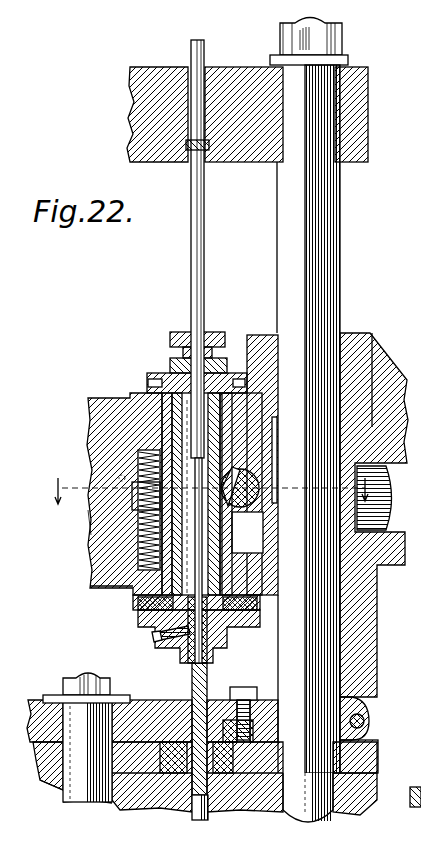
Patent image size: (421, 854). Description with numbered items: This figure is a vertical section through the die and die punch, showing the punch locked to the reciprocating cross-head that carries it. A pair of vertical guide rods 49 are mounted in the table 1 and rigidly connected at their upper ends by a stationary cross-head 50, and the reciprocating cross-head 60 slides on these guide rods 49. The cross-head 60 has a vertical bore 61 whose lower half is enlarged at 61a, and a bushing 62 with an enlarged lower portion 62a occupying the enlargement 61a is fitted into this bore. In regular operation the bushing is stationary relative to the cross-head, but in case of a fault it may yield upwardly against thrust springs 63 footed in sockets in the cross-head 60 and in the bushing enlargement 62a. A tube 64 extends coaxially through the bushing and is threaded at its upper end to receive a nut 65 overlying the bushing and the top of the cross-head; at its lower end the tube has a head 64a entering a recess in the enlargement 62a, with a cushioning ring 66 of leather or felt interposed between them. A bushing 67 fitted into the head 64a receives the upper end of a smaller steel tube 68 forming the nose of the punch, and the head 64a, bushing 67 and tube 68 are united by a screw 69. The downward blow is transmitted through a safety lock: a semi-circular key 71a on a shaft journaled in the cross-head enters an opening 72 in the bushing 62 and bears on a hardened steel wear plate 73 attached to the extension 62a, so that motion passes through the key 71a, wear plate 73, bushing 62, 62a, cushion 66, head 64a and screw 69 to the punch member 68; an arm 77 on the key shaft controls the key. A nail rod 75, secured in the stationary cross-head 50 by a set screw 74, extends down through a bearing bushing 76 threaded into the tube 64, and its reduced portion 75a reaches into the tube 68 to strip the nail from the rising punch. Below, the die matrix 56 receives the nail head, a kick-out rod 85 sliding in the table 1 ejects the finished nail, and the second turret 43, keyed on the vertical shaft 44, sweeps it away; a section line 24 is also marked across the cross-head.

The table 1 is at (358, 795).
The section line 24 is at (212, 491).
The second turret 43 is at (38, 700).
The vertical shaft 44 is at (73, 793).
The vertical guide rods 49 is at (323, 250).
The stationary cross-head 50 is at (149, 67).
The die matrix 56 is at (148, 805).
The reciprocating cross-head 60 is at (95, 424).
The vertical bore 61 is at (128, 399).
The bore enlargement 61a is at (96, 523).
The bushing 62 is at (148, 390).
The bushing enlargement 62a is at (96, 588).
The thrust springs 63 is at (95, 550).
The tube 64 is at (138, 477).
The head 64a is at (152, 637).
The nut 65 is at (158, 372).
The cushioning ring 66 is at (240, 586).
The bushing 67 is at (220, 633).
The steel tube 68 is at (194, 690).
The screw 69 is at (160, 642).
The key 71a is at (246, 480).
The recess or opening 72 is at (271, 441).
The wear plate 73 is at (247, 532).
The set screw 74 is at (206, 152).
The nail rod 75 is at (199, 254).
The reduced portion 75a is at (201, 573).
The bearing bushing 76 is at (217, 331).
The arm 77 is at (120, 478).
The kick-out rod 85 is at (193, 812).